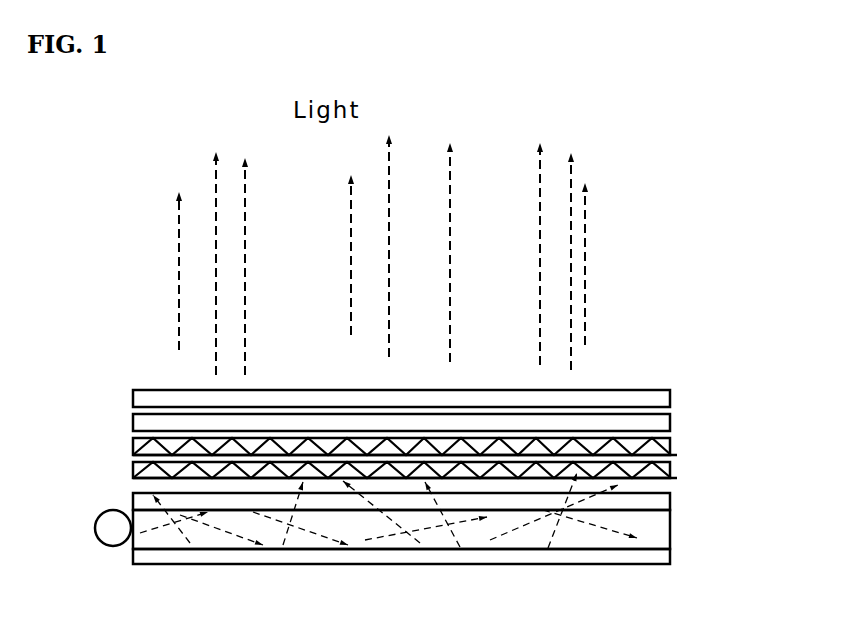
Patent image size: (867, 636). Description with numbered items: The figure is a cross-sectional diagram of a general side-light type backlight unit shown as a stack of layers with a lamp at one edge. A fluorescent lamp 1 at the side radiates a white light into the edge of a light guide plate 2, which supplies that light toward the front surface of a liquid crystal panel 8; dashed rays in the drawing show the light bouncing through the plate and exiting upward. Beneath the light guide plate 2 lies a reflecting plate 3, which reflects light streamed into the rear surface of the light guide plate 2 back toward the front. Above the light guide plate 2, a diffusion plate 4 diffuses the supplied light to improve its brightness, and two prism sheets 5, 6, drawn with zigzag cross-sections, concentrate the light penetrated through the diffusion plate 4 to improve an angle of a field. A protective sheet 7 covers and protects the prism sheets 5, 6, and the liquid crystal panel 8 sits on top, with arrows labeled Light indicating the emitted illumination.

The fluorescent lamp 1 is at (112, 528).
The light guide plate 2 is at (657, 534).
The reflecting plate 3 is at (657, 561).
The diffusion plate 4 is at (657, 507).
The prism sheet 5 is at (657, 476).
The prism sheet 6 is at (657, 450).
The protective sheet 7 is at (657, 426).
The liquid crystal panel 8 is at (657, 400).